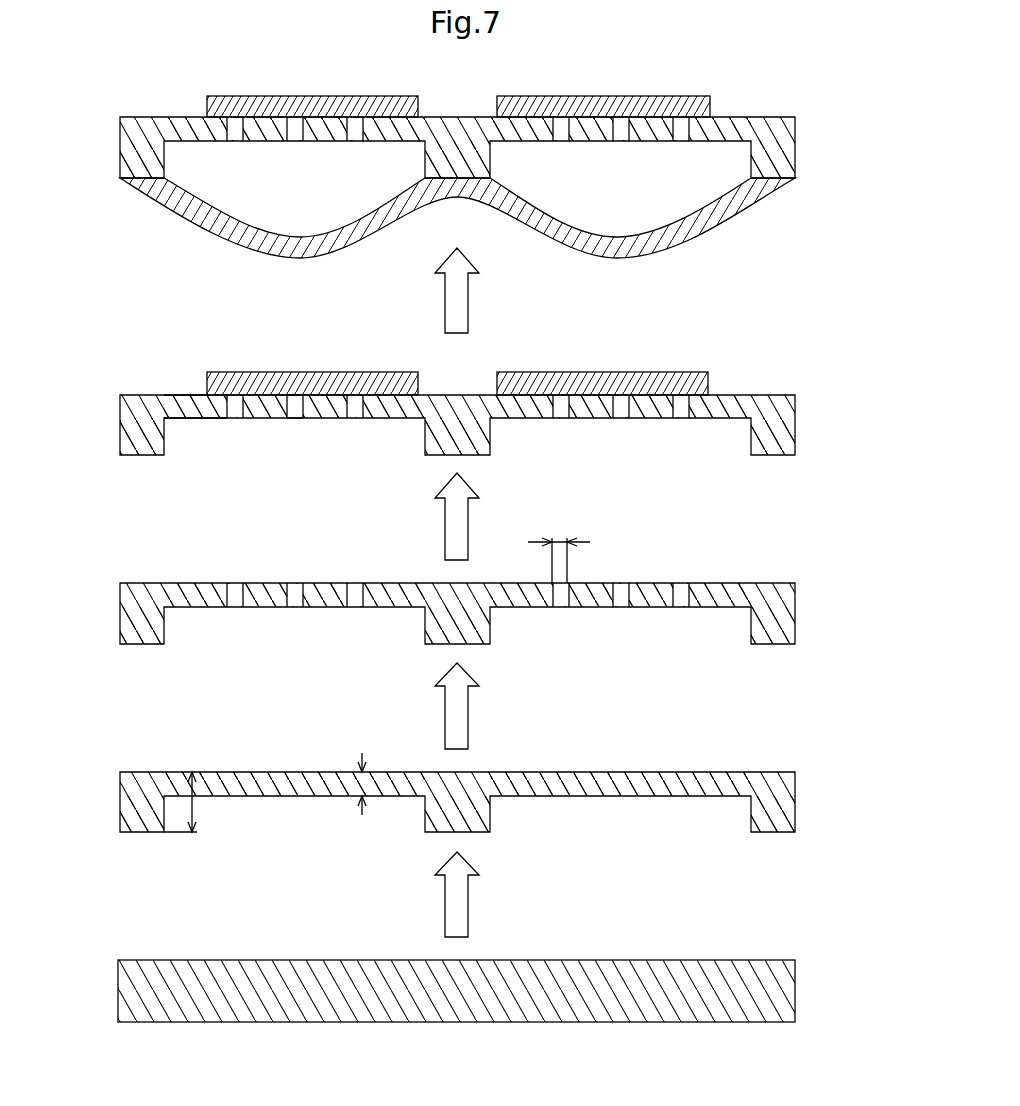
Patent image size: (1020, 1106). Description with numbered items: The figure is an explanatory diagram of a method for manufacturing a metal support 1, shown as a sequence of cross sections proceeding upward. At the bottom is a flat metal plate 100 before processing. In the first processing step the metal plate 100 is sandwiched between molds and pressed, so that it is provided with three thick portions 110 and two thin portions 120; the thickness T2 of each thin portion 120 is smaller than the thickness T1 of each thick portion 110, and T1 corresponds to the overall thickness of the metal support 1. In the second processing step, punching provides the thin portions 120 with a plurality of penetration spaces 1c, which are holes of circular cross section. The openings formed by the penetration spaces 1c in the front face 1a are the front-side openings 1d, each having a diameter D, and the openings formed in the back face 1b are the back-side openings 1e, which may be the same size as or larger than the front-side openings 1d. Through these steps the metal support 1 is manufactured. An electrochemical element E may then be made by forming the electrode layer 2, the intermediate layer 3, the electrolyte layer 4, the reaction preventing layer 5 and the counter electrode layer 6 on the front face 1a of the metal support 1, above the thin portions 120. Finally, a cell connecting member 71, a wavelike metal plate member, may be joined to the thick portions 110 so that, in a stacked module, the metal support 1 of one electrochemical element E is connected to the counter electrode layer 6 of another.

The electrochemical element E is at (118, 100).
The metal support 1 is at (118, 150).
The front face 1a is at (175, 394).
The back face 1b is at (196, 420).
The penetration spaces 1c is at (235, 420).
The front-side openings 1d is at (298, 392).
The back-side openings 1e is at (296, 421).
The electrode layer 2 is at (466, 226).
The intermediate layer 3 is at (466, 226).
The electrolyte layer 4 is at (466, 226).
The reaction preventing layer 5 is at (466, 226).
The counter electrode layer 6 is at (278, 96).
The cell connecting member 71 is at (712, 220).
The metal plate 100 is at (118, 800).
The thick portions 110 is at (158, 163).
The thin portions 120 is at (385, 142).
The diameter D is at (559, 549).
The thickness of thick portions T1 is at (195, 800).
The thickness of thin portions T2 is at (358, 771).